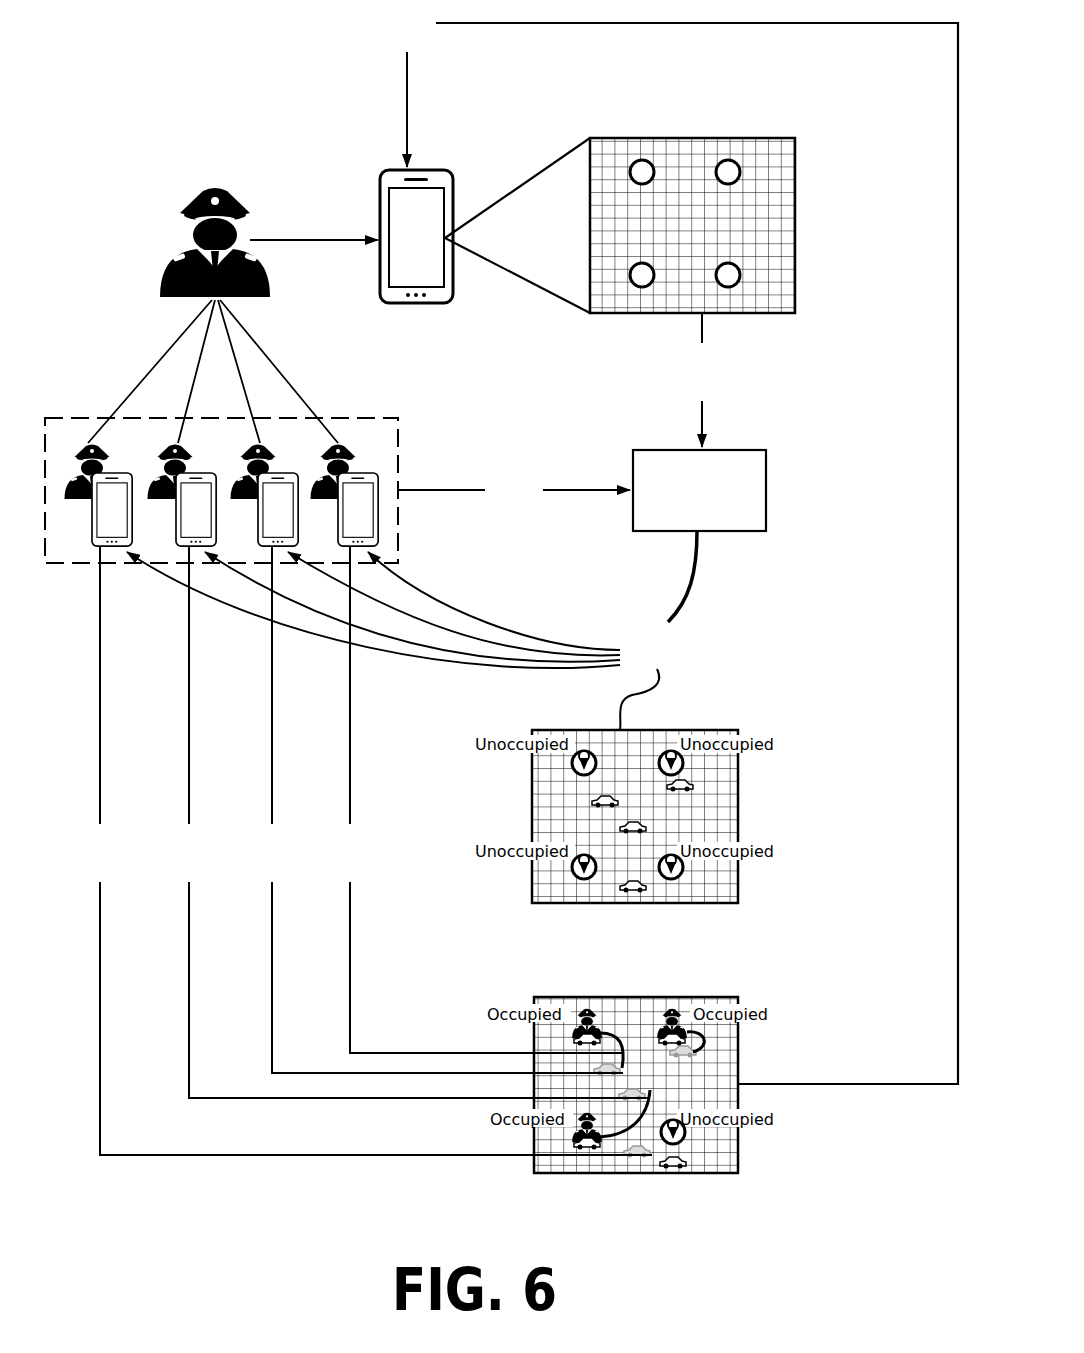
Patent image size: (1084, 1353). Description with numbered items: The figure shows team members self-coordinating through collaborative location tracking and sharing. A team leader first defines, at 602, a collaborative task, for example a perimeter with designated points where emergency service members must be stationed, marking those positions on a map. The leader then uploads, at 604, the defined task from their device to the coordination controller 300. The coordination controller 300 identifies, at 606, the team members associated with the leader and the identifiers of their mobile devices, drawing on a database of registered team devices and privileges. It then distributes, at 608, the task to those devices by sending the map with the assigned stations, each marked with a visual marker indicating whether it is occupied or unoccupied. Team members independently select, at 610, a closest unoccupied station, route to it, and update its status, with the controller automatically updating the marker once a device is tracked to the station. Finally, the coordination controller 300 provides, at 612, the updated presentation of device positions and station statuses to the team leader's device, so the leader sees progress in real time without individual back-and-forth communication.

The defining a collaborative task 602 is at (400, 247).
The uploading the defined collaborative task 604 is at (689, 381).
The identifying the team members 606 is at (501, 499).
The distributing the collaborative task 608 is at (635, 649).
The selecting an unoccupied station 610 is at (83, 862).
The providing the updated presentation 612 is at (394, 32).
The coordination controller 300 is at (699, 490).